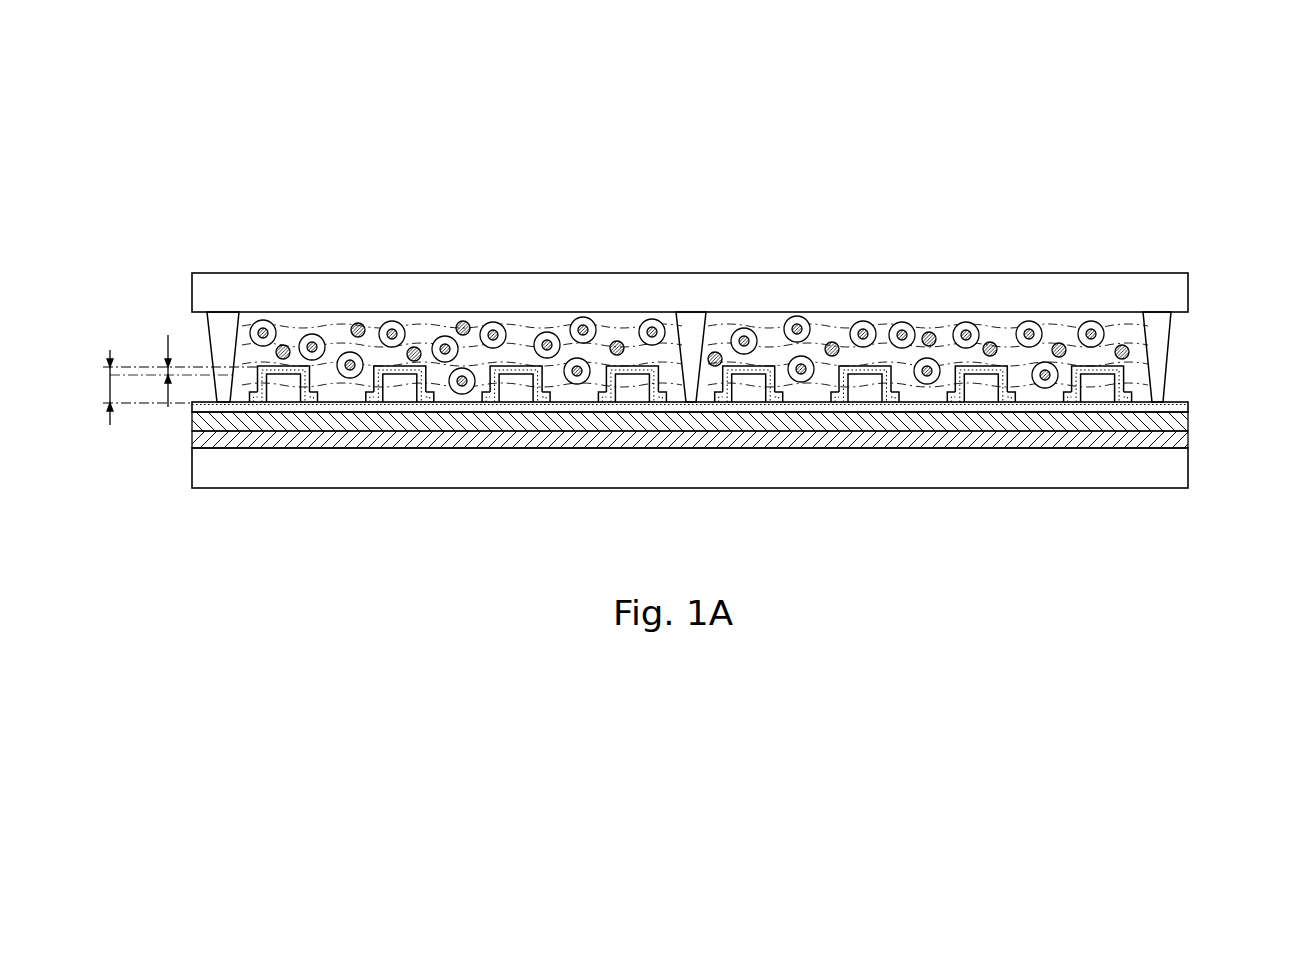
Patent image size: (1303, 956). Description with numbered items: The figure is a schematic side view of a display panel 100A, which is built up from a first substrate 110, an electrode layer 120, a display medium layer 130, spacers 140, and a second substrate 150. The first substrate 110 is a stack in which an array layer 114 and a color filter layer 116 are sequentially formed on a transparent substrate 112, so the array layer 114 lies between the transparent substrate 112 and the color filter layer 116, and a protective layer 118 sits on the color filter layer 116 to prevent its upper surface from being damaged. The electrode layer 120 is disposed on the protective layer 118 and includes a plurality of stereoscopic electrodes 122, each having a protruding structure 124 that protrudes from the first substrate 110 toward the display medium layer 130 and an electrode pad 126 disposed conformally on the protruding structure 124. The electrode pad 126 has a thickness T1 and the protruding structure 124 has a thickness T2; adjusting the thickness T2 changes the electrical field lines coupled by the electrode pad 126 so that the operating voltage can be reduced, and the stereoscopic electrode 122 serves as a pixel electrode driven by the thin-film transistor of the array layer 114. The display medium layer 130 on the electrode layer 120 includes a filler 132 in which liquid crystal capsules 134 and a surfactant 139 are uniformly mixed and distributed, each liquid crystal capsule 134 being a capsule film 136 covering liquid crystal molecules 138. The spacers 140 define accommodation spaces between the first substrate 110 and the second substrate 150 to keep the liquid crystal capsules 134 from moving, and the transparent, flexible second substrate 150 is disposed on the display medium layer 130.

The display panel 100A is at (116, 131).
The first substrate 110 is at (690, 502).
The transparent substrate 112 is at (368, 540).
The array layer 114 is at (286, 437).
The color filter layer 116 is at (343, 422).
The protective layer 118 is at (398, 392).
The electrode layer 120 is at (742, 453).
The stereoscopic electrode 122 is at (691, 478).
The protruding structure 124 is at (978, 387).
The electrode pad 126 is at (988, 370).
The display medium layer 130 is at (734, 278).
The filler 132 is at (738, 278).
The liquid crystal capsule 134 is at (965, 216).
The capsule film 136 is at (888, 326).
The liquid crystal molecule 138 is at (903, 335).
The surfactant 139 is at (1124, 351).
The spacer 140 is at (688, 327).
The second substrate 150 is at (217, 292).
The thickness of the electrode pad T1 is at (165, 367).
The thickness of the protruding structure T2 is at (110, 386).